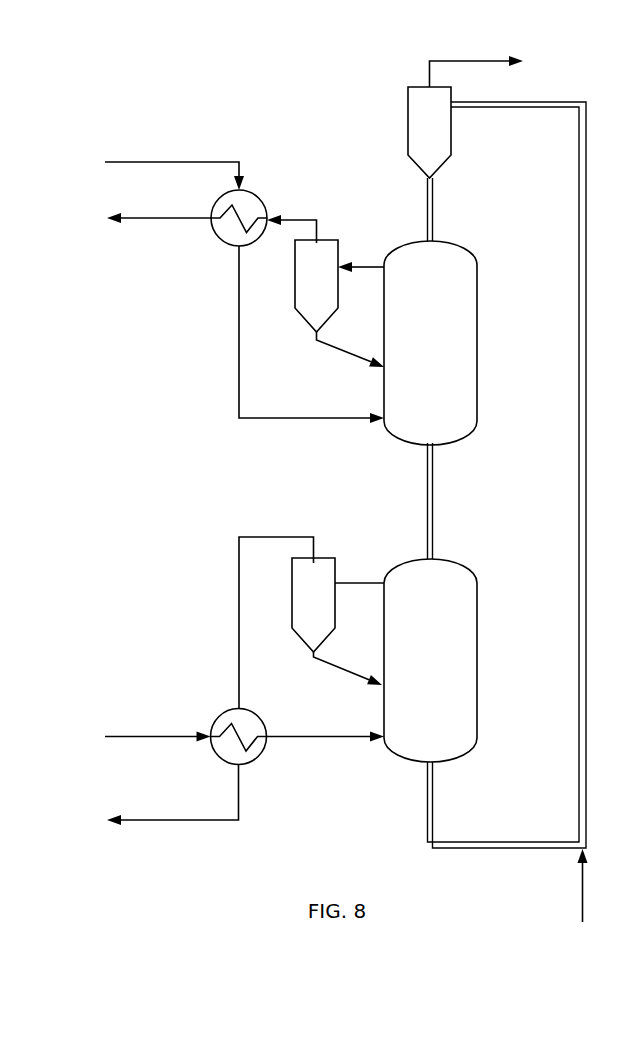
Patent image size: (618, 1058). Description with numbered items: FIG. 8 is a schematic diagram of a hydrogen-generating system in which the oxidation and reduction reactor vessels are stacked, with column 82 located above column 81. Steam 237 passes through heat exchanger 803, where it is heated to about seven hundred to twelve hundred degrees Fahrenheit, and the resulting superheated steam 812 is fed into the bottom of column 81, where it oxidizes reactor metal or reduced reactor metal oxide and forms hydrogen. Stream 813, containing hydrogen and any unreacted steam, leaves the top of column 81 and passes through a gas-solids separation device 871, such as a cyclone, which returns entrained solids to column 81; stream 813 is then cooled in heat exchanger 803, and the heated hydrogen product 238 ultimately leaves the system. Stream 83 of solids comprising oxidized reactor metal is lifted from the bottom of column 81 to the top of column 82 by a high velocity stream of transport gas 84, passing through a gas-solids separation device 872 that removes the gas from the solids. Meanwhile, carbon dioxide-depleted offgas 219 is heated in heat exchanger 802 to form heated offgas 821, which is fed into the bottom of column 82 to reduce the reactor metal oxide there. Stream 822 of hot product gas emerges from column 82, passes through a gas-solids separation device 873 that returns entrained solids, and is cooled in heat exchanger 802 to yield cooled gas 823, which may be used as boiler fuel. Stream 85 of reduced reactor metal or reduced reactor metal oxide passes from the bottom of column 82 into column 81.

The column 81 is at (430, 660).
The column 82 is at (430, 343).
The stream of solids 83 is at (507, 475).
The transport gas 84 is at (583, 898).
The stream 85 is at (448, 501).
The CO2-depleted offgas 219 is at (174, 163).
The steam 237 is at (158, 727).
The heated hydrogen product 238 is at (173, 795).
The heat exchanger 802 is at (206, 250).
The heat exchanger 803 is at (210, 696).
The superheated steam 812 is at (326, 728).
The stream 813 is at (359, 572).
The heated offgas 821 is at (311, 334).
The stream of hot product gas 822 is at (361, 254).
The cooled gas 823 is at (159, 208).
The gas-solids separation device 871 is at (310, 622).
The gas-solids separation device 872 is at (465, 117).
The gas-solids separation device 873 is at (325, 291).